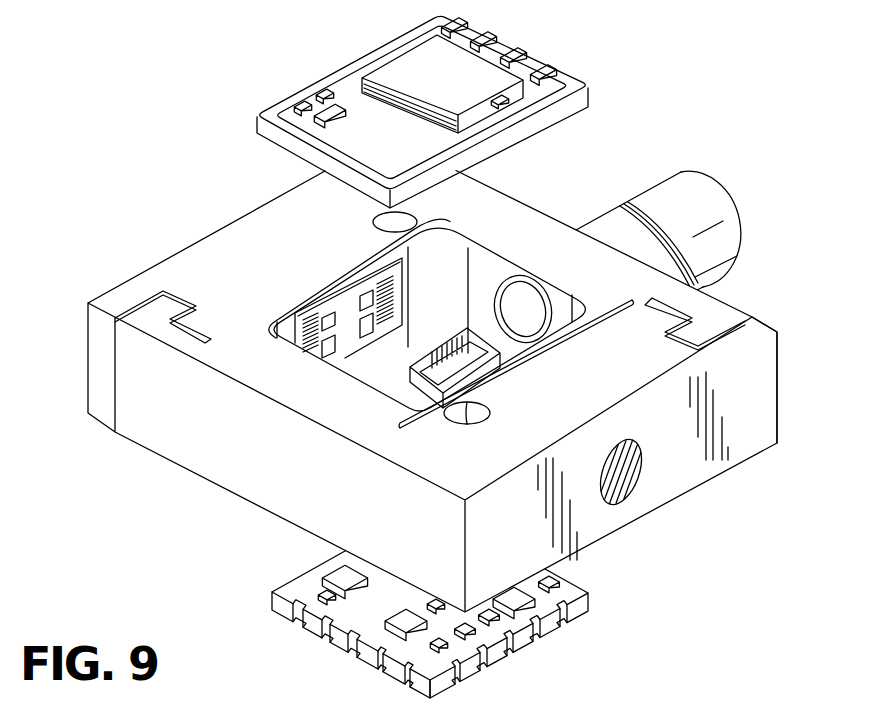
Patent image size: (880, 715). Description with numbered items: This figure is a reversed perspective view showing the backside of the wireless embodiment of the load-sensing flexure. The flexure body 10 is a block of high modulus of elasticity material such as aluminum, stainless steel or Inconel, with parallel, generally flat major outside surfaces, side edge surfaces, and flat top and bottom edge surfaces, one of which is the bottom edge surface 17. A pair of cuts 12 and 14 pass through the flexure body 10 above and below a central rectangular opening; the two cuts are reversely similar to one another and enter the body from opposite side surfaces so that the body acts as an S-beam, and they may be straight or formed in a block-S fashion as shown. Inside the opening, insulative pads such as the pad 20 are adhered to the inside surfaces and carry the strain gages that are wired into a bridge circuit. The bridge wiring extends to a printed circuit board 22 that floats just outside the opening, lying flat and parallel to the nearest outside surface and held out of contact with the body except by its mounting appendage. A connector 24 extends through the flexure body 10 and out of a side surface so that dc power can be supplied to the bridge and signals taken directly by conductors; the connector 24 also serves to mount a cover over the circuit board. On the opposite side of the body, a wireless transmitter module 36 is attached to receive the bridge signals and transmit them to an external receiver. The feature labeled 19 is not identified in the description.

The flexure body 10 is at (210, 263).
The cut 12 is at (307, 283).
The cut 14 is at (560, 357).
The bottom edge surface 17 is at (762, 406).
The aperture 19 is at (635, 481).
The insulative pad 20 is at (403, 297).
The printed circuit board 22 is at (522, 648).
The connector 24 is at (743, 223).
The wireless transmitter module 36 is at (358, 65).